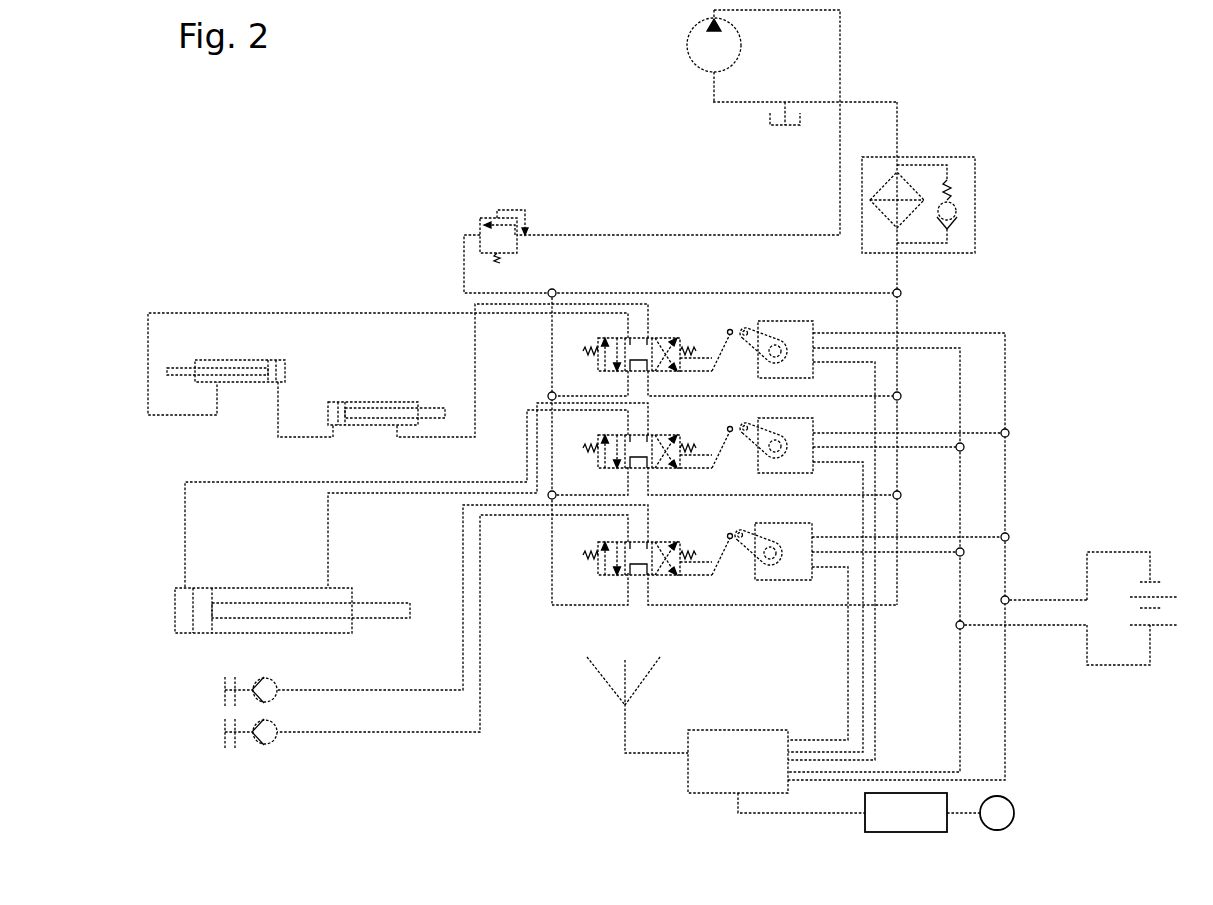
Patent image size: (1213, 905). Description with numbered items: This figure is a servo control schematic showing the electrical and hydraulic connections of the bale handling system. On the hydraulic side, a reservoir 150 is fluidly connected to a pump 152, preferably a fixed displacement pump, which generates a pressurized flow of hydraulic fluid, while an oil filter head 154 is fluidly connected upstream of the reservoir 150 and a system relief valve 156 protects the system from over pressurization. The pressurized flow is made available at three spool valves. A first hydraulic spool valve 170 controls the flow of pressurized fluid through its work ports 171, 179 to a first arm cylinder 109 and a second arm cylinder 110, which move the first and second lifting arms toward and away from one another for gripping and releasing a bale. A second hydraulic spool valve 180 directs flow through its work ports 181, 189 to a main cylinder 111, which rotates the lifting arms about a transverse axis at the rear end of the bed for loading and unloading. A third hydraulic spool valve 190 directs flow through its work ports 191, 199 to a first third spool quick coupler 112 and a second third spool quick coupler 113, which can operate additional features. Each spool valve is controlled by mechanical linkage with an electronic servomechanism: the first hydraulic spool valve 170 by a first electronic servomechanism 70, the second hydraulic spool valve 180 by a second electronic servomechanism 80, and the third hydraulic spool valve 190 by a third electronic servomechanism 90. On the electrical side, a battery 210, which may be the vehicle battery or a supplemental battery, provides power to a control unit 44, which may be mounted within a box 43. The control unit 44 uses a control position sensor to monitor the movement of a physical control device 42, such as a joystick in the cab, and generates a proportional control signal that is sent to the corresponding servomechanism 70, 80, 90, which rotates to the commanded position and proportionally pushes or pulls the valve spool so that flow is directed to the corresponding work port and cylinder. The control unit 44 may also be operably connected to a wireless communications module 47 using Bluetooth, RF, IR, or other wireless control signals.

The pump 152 is at (689, 38).
The reservoir 150 is at (797, 126).
The system relief valve 156 is at (492, 217).
The oil filter head 154 is at (976, 192).
The first arm cylinder 109 is at (255, 360).
The second arm cylinder 110 is at (403, 402).
The main cylinder 111 is at (275, 588).
The first third spool quick coupler 112 is at (223, 688).
The second third spool quick coupler 113 is at (223, 731).
The first hydraulic spool valve 170 is at (661, 337).
The work port 171 is at (614, 373).
The work port 179 is at (662, 373).
The second hydraulic spool valve 180 is at (661, 434).
The work port 181 is at (614, 470).
The work port 189 is at (662, 470).
The third hydraulic spool valve 190 is at (661, 541).
The work port 191 is at (614, 577).
The work port 199 is at (662, 577).
The first electronic servomechanism 70 is at (812, 375).
The second electronic servomechanism 80 is at (812, 468).
The third electronic servomechanism 90 is at (810, 591).
The battery 210 is at (1127, 552).
The wireless communications module 47 is at (625, 730).
The control unit 44 is at (751, 787).
The box 43 is at (917, 830).
The physical control device 42 is at (1013, 821).